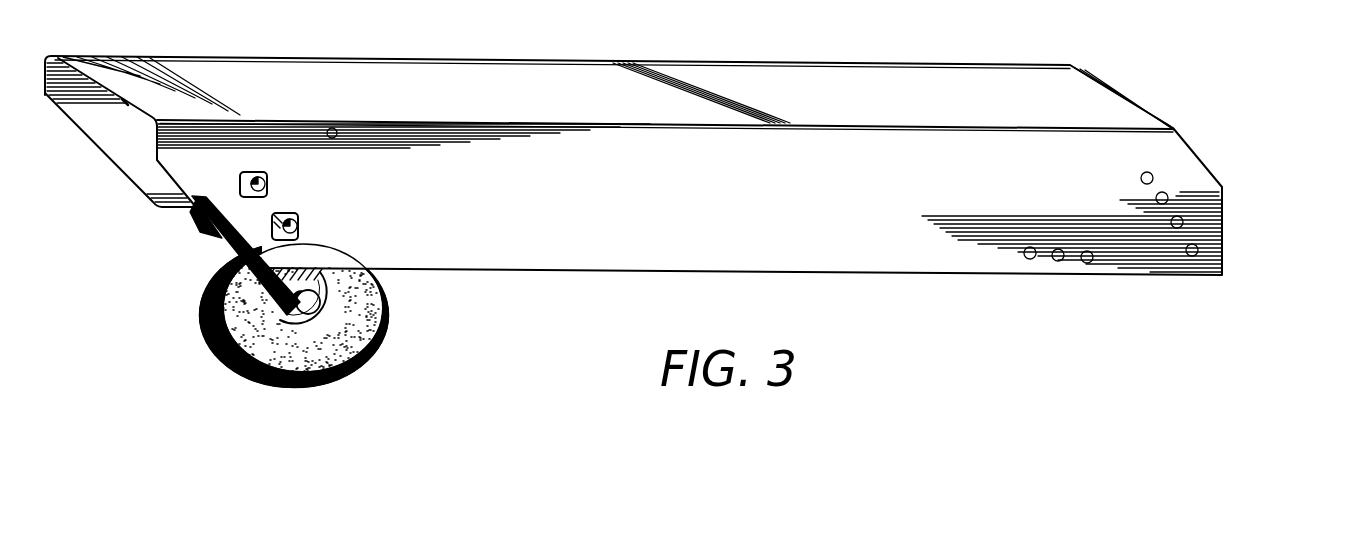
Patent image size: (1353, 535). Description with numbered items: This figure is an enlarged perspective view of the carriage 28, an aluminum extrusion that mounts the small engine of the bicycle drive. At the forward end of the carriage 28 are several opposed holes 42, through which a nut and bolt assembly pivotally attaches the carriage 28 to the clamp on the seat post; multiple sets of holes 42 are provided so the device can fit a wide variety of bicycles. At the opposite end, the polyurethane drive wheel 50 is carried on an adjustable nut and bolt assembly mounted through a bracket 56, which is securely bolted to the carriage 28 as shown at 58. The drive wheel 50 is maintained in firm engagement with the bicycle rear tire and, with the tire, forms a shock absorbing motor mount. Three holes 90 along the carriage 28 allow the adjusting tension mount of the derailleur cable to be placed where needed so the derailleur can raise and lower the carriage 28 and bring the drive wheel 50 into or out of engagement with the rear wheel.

The carriage 28 is at (638, 192).
The holes 42 is at (1153, 176).
The drive wheel 50 is at (228, 348).
The bracket 56 is at (324, 268).
The bolted attachment of bracket 58 is at (267, 183).
The holes 90 is at (1033, 259).